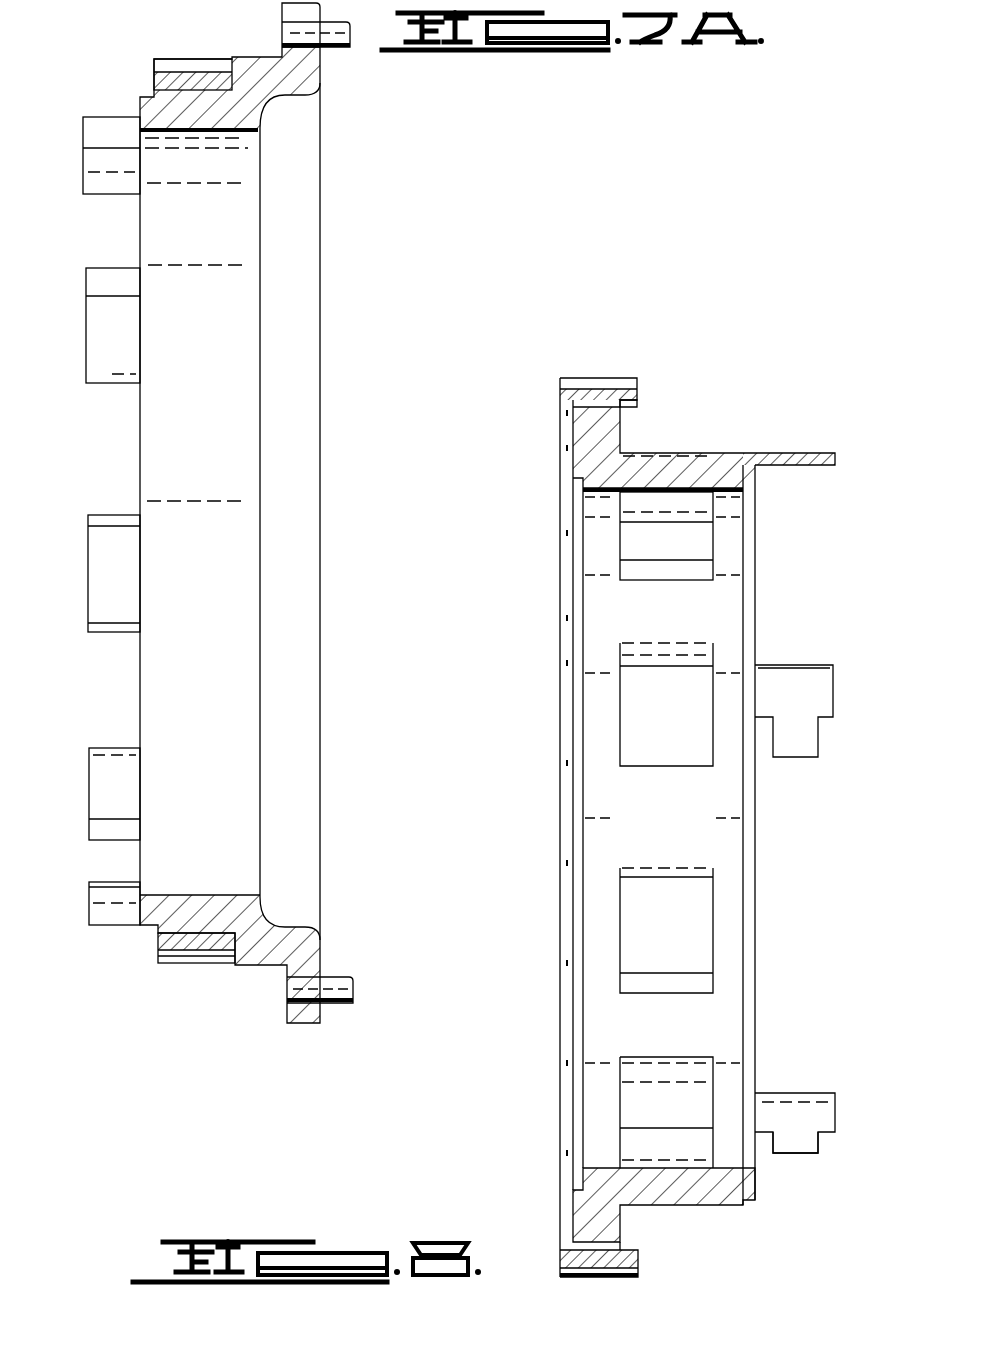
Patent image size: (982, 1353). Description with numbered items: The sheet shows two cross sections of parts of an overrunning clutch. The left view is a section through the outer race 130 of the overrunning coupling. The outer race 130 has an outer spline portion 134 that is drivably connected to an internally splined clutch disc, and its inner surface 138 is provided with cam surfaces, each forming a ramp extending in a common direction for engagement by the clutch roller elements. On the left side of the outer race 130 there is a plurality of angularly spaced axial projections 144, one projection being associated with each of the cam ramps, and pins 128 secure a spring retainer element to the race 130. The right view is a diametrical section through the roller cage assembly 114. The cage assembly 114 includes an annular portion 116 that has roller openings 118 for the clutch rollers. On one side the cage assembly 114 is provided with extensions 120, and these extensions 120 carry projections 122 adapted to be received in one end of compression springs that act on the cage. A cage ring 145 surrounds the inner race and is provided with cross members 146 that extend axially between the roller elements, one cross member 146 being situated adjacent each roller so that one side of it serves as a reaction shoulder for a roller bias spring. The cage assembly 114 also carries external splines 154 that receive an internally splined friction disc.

In FIG. 8, the roller cage assembly 114 is at (766, 955).
In FIG. 8, the annular portion 116 is at (733, 890).
In FIG. 8, the roller openings 118 is at (622, 745).
In FIG. 8, the extensions 120 is at (822, 1133).
In FIG. 8, the projections 122 is at (805, 1155).
In FIG. 7A, the pins 128 is at (353, 993).
In FIG. 7A, the outer race 130 is at (280, 920).
In FIG. 7A, the outer spline portion 134 is at (173, 942).
In FIG. 7A, the inner surface 138 is at (183, 895).
In FIG. 7A, the axial projections 144 is at (108, 540).
In FIG. 8, the cage ring 145 is at (733, 1016).
In FIG. 8, the cross members 146 is at (676, 765).
In FIG. 8, the external splines 154 is at (612, 382).